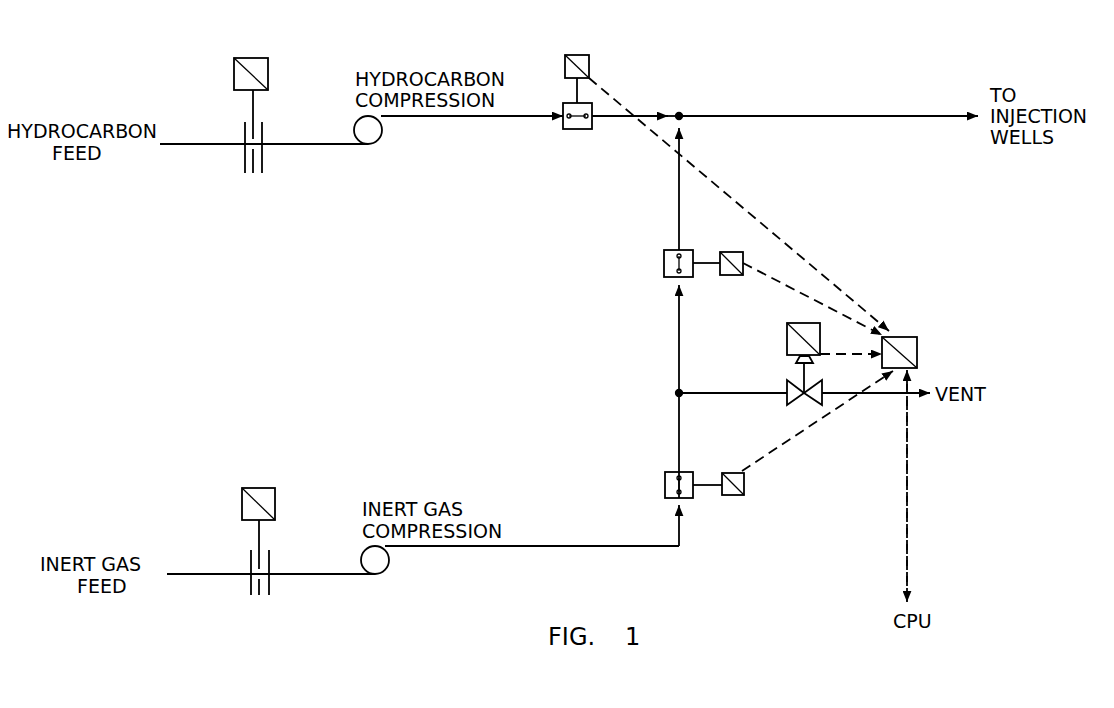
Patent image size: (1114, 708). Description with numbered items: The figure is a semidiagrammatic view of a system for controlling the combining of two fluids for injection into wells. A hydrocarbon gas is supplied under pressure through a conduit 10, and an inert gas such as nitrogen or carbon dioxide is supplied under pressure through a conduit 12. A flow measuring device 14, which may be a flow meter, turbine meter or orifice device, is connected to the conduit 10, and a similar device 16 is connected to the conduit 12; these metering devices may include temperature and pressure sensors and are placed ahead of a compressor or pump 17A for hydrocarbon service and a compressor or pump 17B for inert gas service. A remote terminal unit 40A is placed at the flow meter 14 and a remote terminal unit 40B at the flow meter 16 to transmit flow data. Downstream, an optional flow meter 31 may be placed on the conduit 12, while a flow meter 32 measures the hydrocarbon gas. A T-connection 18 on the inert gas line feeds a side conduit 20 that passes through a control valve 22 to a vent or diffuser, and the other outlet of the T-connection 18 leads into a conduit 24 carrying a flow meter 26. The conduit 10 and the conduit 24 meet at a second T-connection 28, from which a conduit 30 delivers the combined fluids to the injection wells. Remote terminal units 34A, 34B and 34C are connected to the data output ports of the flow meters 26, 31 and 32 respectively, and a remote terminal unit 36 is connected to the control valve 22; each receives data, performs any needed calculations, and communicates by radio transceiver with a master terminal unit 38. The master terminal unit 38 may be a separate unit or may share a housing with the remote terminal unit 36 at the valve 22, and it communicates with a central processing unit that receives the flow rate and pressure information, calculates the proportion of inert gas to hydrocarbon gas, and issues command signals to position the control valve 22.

The conduit 10 is at (192, 144).
The conduit 12 is at (185, 574).
The flow measuring device 14 is at (257, 175).
The flow measuring device 16 is at (265, 597).
The compressor or pump 17A is at (381, 134).
The compressor or pump 17B is at (389, 563).
The T-connection 18 is at (679, 392).
The side conduit 20 is at (713, 393).
The control valve 22 is at (822, 400).
The conduit 24 is at (679, 350).
The flow meter 26 is at (664, 260).
The second T-connection 28 is at (679, 114).
The conduit 30 is at (770, 116).
The flow meter 31 is at (665, 483).
The flow meter 32 is at (582, 130).
The remote terminal unit 34A is at (737, 252).
The remote terminal unit 34B is at (733, 495).
The remote terminal unit 34C is at (573, 55).
The remote terminal unit 36 is at (803, 323).
The master terminal unit 38 is at (902, 337).
The remote terminal unit 40A is at (245, 57).
The remote terminal unit 40B is at (268, 488).